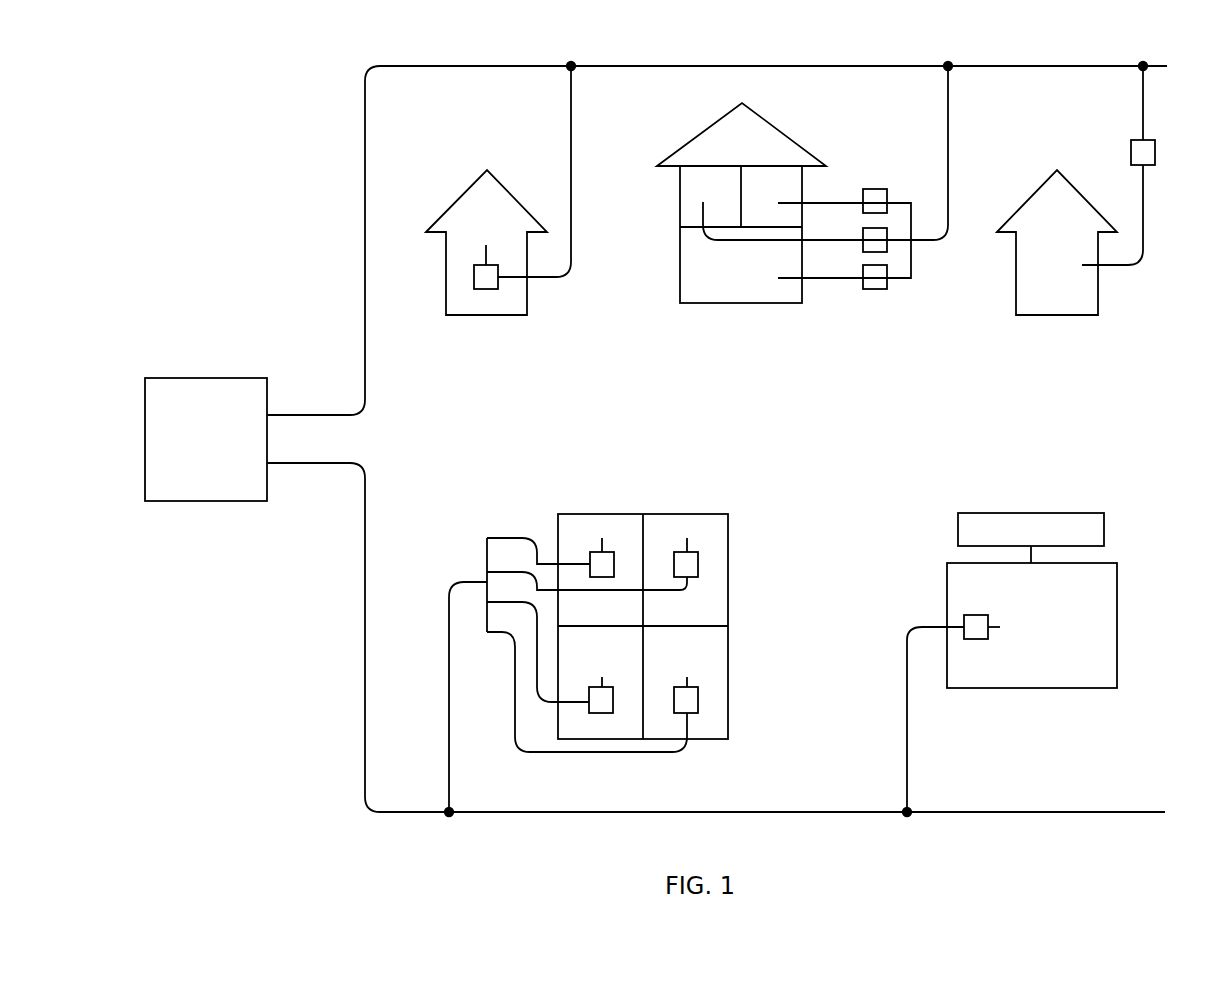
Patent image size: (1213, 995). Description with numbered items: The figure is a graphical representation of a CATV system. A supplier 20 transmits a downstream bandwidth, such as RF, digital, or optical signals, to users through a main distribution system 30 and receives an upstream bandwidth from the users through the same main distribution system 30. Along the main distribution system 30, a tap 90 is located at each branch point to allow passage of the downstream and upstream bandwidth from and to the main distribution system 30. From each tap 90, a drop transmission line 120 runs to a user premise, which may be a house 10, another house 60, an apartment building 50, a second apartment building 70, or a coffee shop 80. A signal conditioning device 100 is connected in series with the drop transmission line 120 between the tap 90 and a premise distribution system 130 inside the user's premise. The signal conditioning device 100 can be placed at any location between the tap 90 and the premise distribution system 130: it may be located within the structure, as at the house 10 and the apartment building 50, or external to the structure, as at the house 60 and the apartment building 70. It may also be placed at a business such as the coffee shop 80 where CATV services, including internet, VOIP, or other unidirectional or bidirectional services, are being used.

The house 10 is at (499, 331).
The supplier 20 is at (193, 388).
The main distribution system 30 is at (680, 66).
The apartment building 50 is at (754, 323).
The house 60 is at (1058, 328).
The apartment building 70 is at (682, 490).
The coffee shop 80 is at (1134, 535).
The tap 90 is at (571, 66).
The signal conditioning device 100 is at (487, 290).
The drop transmission line 120 is at (571, 130).
The premise distribution system 130 is at (486, 250).